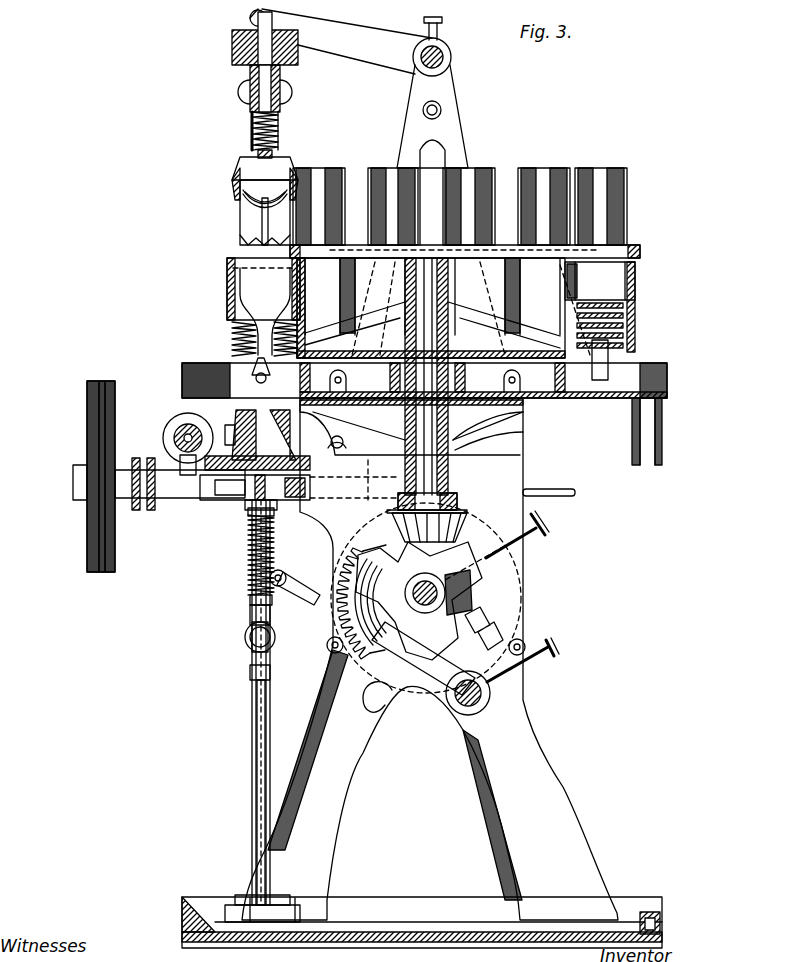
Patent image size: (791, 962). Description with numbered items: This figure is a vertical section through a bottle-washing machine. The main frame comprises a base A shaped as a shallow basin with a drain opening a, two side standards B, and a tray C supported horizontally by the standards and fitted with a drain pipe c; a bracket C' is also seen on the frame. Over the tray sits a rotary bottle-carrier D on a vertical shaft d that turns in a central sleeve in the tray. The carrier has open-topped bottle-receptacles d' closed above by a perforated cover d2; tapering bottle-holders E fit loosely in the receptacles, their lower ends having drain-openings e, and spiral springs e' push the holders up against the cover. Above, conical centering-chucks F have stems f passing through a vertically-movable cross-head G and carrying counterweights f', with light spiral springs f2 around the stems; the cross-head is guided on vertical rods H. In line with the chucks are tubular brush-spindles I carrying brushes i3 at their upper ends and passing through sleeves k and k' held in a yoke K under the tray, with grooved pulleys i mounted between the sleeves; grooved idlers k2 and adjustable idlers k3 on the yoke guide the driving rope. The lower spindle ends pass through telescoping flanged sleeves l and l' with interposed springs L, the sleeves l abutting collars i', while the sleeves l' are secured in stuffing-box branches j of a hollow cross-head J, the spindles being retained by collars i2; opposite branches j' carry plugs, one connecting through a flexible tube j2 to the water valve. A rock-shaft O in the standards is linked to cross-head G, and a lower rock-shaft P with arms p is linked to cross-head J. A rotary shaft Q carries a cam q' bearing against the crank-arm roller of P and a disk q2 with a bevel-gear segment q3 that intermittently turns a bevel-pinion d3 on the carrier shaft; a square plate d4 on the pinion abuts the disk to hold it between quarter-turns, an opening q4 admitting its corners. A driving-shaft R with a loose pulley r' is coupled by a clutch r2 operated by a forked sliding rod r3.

The base A is at (422, 921).
The drain connection a is at (662, 922).
The side standards B is at (470, 152).
The tray C is at (424, 380).
The bracket C' is at (488, 432).
The drain pipe c is at (647, 431).
The rotary bottle-carrier D is at (443, 308).
The vertical shaft d is at (410, 376).
The bottle-receptacles d' is at (431, 261).
The cover d2 is at (430, 240).
The bevel-pinion d3 is at (455, 548).
The polygonal plate d4 is at (475, 503).
The bottle-holders E is at (227, 288).
The drain-openings e is at (415, 364).
The spiral springs e' is at (429, 329).
The conical centering-chucks F is at (238, 166).
The stems f is at (277, 85).
The counterweights f' is at (247, 47).
The spiral springs f2 is at (252, 126).
The cross-head G is at (250, 90).
The vertical rods H is at (252, 770).
The rotary tubes I is at (255, 213).
The grooved pulleys i is at (257, 447).
The collars i' is at (250, 517).
The nuts or collars i2 is at (275, 640).
The brushes i3 is at (248, 198).
The hollow cross-head J is at (245, 637).
The branches j is at (245, 610).
The branches j' is at (244, 666).
The flexible tube j2 is at (257, 702).
The yoke K is at (235, 438).
The sleeves k is at (300, 480).
The sleeves k' is at (222, 507).
The grooved idlers k2 is at (232, 440).
The idlers k3 is at (178, 425).
The spiral springs L is at (248, 545).
The flanged sleeve l is at (268, 555).
The flanged sleeve l' is at (247, 585).
The rock-shaft O is at (452, 52).
The rock-shaft P is at (448, 705).
The arms p is at (312, 600).
The rotary shaft Q is at (425, 583).
The cam q' is at (342, 602).
The disk q2 is at (510, 575).
The segment of a bevel-gear q3 is at (426, 598).
The opening q4 is at (498, 625).
The driving-shaft R is at (140, 470).
The pulley r' is at (78, 476).
The clutch r2 is at (140, 510).
The forked sliding rod r3 is at (560, 485).